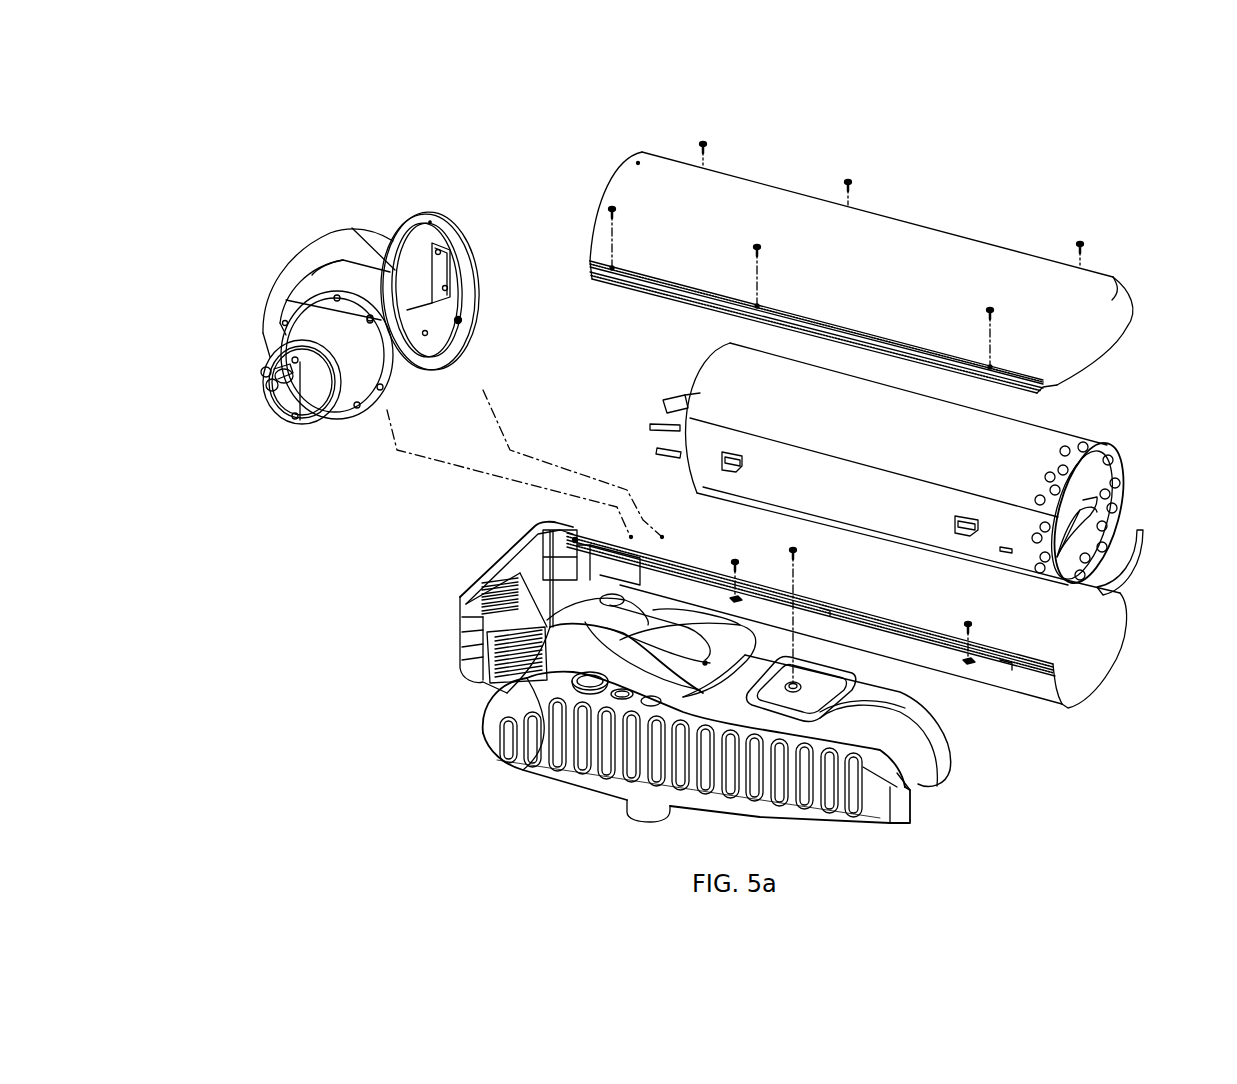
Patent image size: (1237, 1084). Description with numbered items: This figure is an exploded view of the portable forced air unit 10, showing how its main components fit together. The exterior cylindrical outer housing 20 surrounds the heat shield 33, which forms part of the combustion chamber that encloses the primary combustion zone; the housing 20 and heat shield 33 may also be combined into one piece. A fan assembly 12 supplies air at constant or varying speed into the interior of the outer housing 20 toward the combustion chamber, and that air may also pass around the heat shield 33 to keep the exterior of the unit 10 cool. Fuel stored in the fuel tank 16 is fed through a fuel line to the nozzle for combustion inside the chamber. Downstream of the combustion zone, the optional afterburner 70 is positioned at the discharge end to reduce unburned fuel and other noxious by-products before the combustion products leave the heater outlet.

The portable forced air unit 10 is at (1050, 146).
The fan assembly 12 is at (268, 318).
The fuel tank 16 is at (500, 743).
The outer housing 20 is at (1017, 260).
The heat shield 33 is at (1063, 443).
The afterburner 70 is at (1080, 503).